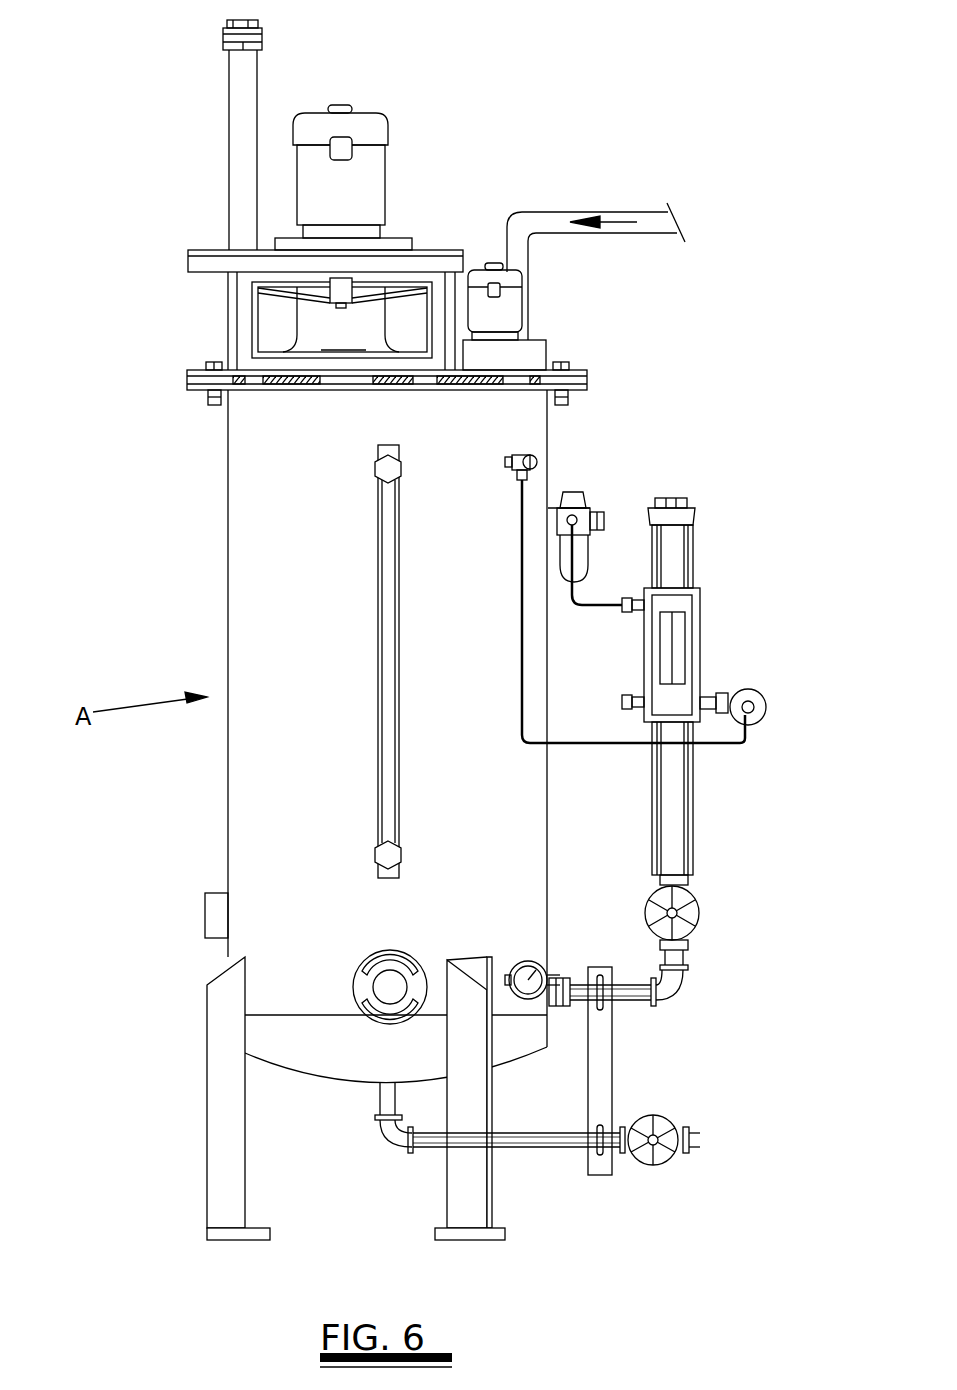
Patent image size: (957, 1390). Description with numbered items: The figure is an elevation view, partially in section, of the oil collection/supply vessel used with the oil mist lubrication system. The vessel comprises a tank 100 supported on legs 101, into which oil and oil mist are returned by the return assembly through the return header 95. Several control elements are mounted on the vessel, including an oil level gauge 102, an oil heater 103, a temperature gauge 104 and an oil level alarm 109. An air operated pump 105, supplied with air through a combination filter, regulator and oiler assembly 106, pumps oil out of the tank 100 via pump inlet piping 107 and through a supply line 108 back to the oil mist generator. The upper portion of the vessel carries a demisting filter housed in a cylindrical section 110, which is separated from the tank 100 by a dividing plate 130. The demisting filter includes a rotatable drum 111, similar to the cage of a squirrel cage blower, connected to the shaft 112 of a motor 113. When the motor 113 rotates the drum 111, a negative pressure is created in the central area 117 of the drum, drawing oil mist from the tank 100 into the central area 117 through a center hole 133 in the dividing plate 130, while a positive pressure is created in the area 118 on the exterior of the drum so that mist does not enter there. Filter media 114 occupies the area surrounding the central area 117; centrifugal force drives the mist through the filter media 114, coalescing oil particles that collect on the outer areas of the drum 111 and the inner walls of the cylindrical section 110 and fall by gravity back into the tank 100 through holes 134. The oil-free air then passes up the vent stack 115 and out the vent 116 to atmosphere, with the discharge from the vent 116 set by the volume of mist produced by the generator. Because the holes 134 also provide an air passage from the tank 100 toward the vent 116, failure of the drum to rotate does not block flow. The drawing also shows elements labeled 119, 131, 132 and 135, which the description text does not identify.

The return header 95 is at (640, 212).
The tank 100 is at (262, 833).
The legs 101 is at (237, 1152).
The oil level gauge 102 is at (392, 697).
The oil heater 103 is at (393, 980).
The temperature gauge 104 is at (532, 960).
The air operated pump 105 is at (690, 578).
The combination filter, regulator and oiler assembly 106 is at (625, 598).
The pump inlet piping 107 is at (627, 1005).
The supply line 108 is at (753, 715).
The oil level alarm 109 is at (205, 930).
The cylindrical section 110 is at (226, 315).
The rotatable drum 111 is at (432, 315).
The shaft 112 is at (340, 297).
The motor 113 is at (372, 170).
The filter media 114 is at (490, 333).
The vent stack 115 is at (243, 146).
The vent 116 is at (262, 33).
The central area 117 is at (347, 336).
The area on the exterior of the drum 118 is at (247, 337).
The solenoid valve 119 is at (512, 300).
The dividing plate 130 is at (212, 380).
The flange 131 is at (190, 372).
The gasket 132 is at (190, 388).
The center hole 133 is at (340, 385).
The holes 134 is at (250, 390).
The flange end 135 is at (517, 382).